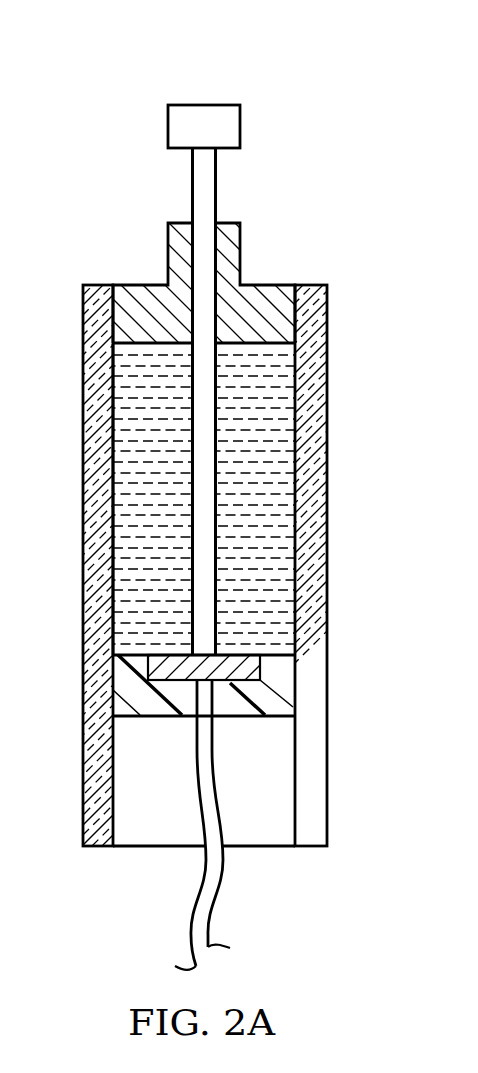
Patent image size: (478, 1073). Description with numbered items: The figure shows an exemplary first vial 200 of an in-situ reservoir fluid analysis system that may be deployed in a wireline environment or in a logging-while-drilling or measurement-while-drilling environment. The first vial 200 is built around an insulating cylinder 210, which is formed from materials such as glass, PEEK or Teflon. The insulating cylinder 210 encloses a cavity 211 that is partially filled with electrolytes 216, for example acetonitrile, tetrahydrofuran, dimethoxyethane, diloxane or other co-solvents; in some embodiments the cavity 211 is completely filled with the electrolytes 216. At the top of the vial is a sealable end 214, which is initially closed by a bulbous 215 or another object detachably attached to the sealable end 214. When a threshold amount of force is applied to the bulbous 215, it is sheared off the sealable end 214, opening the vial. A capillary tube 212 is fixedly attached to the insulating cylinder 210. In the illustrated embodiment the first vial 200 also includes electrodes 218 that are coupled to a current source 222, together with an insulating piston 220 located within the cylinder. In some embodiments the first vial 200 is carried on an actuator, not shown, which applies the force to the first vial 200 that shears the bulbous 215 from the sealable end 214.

The first vial 200 is at (164, 66).
The insulating cylinder 210 is at (83, 653).
The cavity 211 is at (111, 423).
The capillary tube 212 is at (168, 246).
The sealable end 214 is at (232, 223).
The bulbous 215 is at (168, 127).
The electrolytes 216 is at (126, 468).
The electrodes 218 is at (236, 663).
The insulating piston 220 is at (153, 708).
The current source 222 is at (188, 925).